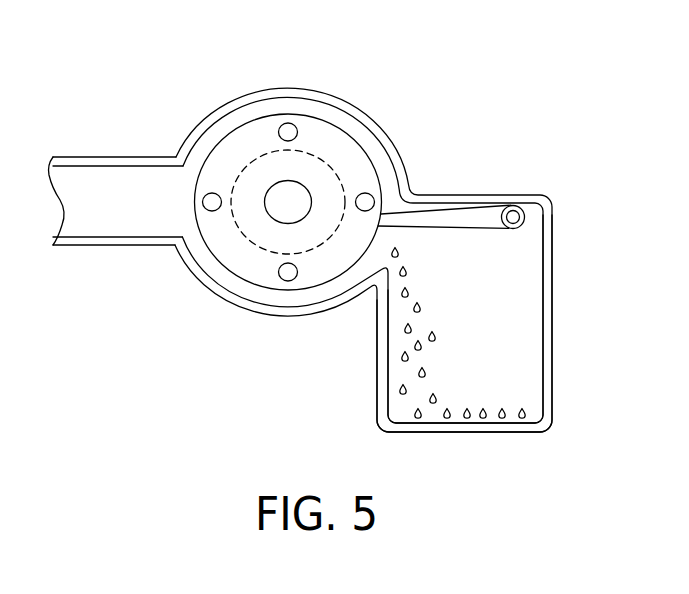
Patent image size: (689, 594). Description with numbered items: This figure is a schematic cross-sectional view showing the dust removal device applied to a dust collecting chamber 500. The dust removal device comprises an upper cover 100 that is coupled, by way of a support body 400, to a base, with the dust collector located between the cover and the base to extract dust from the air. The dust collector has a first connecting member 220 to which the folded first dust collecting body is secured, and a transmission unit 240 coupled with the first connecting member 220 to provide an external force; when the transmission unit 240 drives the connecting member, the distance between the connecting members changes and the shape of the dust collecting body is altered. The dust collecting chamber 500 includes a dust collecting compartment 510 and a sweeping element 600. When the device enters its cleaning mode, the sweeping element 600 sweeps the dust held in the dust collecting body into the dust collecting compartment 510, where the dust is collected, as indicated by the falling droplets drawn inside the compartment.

The upper cover 100 is at (252, 130).
The first connecting member 220 is at (322, 158).
The transmission unit 240 is at (310, 190).
The support body 400 is at (383, 192).
The dust collecting chamber 500 is at (92, 154).
The dust collecting compartment 510 is at (543, 318).
The sweeping element 600 is at (483, 217).